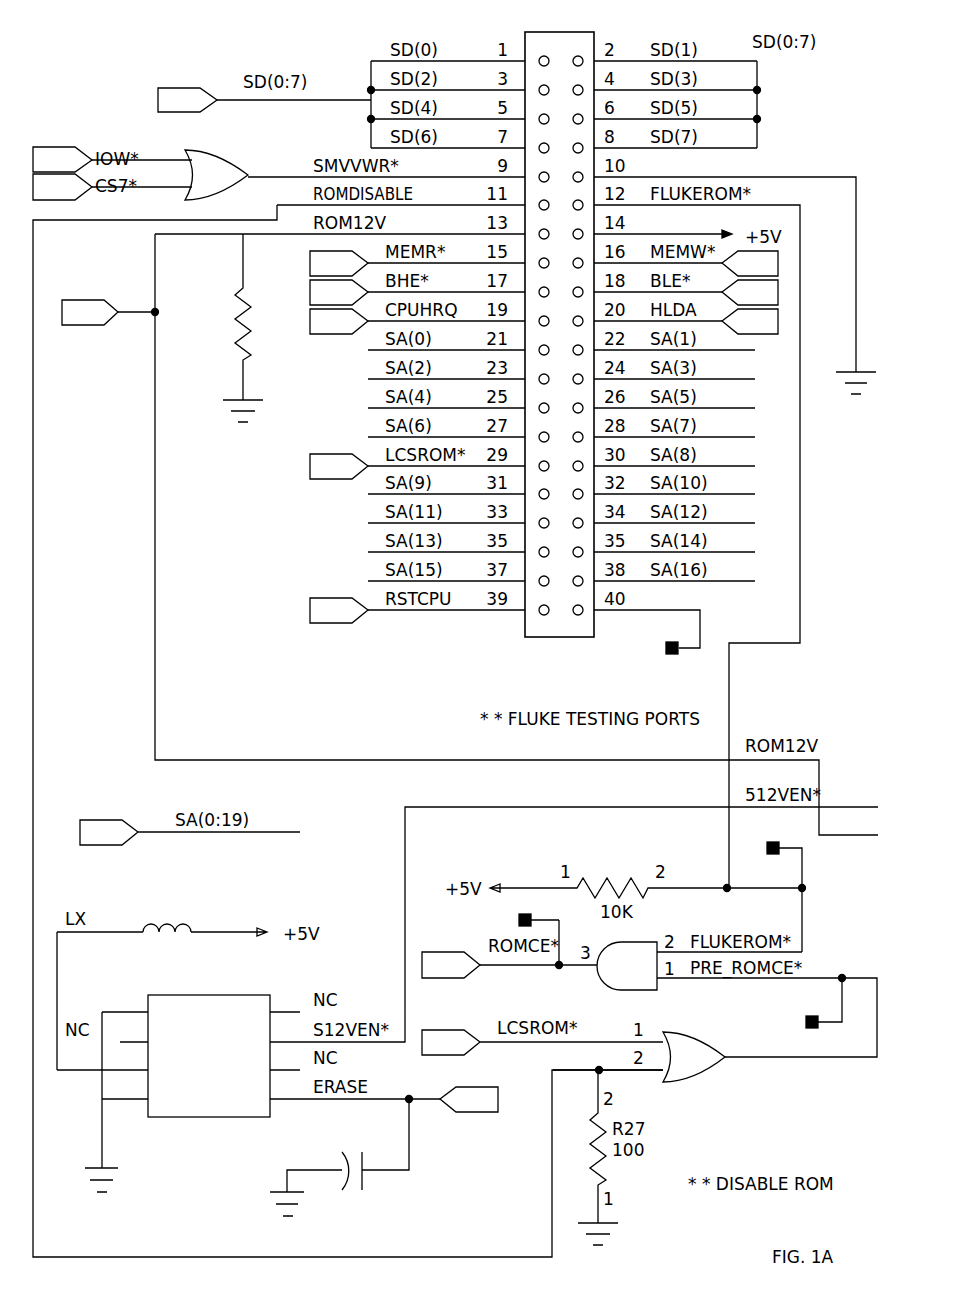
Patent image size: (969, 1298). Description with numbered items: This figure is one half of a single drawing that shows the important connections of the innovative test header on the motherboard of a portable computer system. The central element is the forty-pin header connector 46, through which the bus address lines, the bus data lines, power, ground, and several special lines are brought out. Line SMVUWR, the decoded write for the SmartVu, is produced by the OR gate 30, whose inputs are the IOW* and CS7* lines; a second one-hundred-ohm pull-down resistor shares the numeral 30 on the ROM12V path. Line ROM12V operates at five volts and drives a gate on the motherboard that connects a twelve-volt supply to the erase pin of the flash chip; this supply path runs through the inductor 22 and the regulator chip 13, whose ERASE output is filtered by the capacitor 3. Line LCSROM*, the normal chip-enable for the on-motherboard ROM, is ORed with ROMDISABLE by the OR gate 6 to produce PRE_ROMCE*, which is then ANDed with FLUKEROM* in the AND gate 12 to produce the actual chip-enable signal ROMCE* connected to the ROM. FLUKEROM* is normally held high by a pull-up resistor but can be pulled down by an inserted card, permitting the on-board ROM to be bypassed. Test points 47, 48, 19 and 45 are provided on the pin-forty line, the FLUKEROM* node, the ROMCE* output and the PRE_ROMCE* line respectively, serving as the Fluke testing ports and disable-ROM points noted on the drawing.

The header connector HDR,STM,.050 46 is at (561, 338).
The OR gate ACT32 / 100 ohm resistor 30 is at (221, 274).
The test port 47 is at (655, 649).
The test port 48 is at (768, 895).
The test port 19 is at (508, 919).
The AND gate ACT08 12 is at (627, 966).
The test port 45 is at (808, 1006).
The OR gate ACT32 6 is at (718, 1063).
The inductor 150UH 22 is at (169, 931).
The MAX032 regulator 13 is at (208, 1059).
The capacitor 1.10 UF 16V 3 is at (359, 1178).